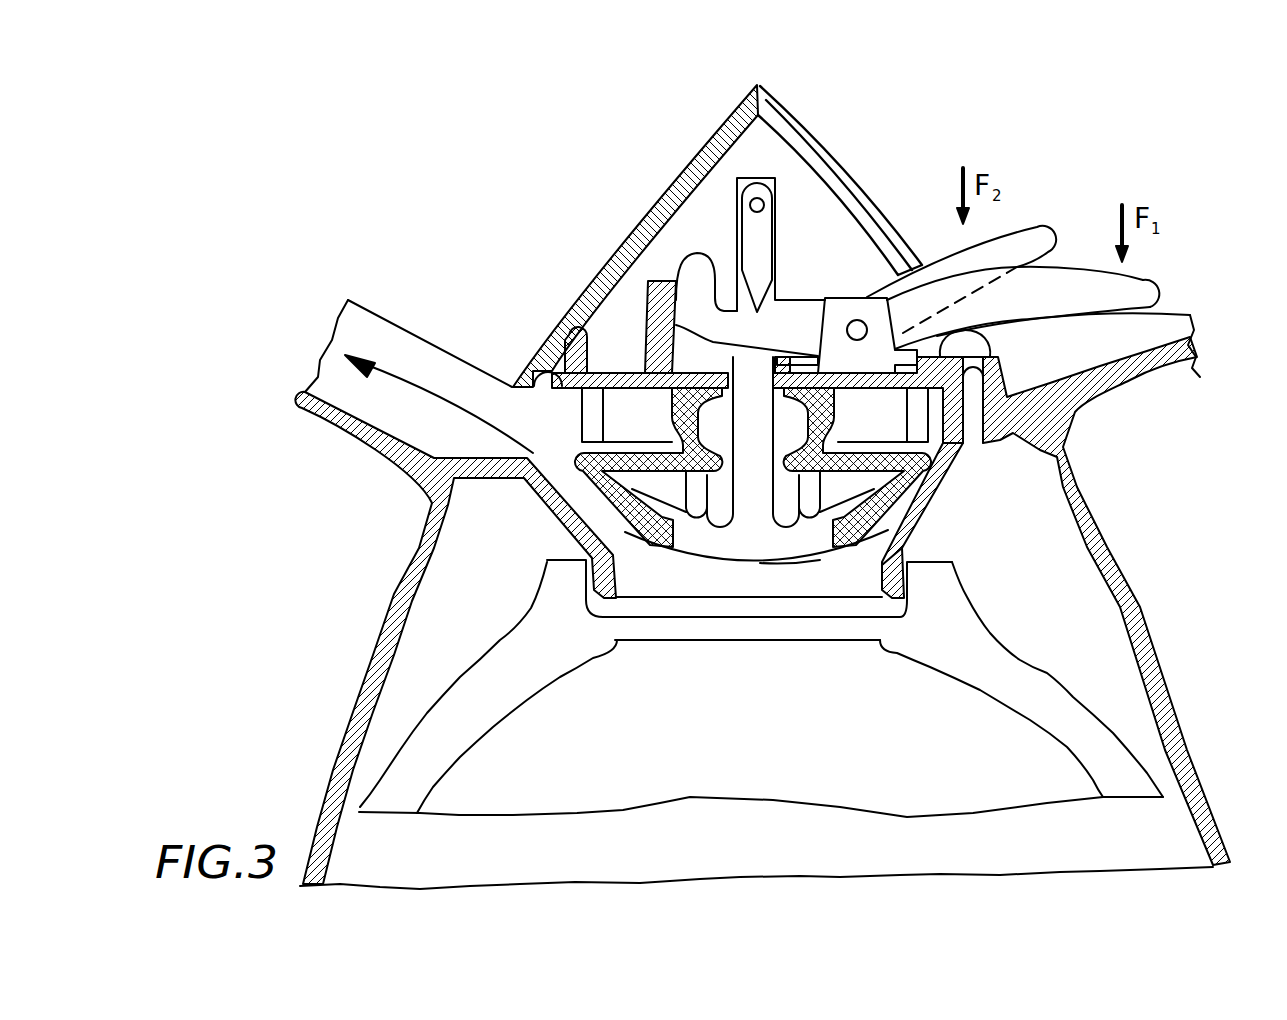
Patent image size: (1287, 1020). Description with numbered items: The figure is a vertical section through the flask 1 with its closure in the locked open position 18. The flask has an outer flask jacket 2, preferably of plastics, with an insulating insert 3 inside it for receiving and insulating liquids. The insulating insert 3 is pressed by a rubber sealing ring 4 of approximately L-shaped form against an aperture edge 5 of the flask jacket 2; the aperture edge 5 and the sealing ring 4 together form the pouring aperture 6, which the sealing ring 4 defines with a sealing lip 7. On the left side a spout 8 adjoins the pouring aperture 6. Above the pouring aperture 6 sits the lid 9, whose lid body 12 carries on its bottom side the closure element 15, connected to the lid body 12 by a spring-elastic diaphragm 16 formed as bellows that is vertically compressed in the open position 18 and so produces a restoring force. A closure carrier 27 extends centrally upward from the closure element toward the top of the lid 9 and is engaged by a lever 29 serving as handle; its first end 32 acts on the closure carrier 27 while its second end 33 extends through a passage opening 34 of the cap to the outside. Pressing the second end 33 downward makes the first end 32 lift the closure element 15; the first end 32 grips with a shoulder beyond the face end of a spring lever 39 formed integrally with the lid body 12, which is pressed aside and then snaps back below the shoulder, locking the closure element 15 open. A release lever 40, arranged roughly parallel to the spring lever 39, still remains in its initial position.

The flask 1 is at (648, 155).
The outer flask jacket 2 is at (348, 734).
The insulating insert 3 is at (434, 770).
The sealing ring 4 is at (588, 585).
The aperture edge 5 is at (633, 572).
The pouring aperture 6 is at (701, 578).
The sealing lip 7 is at (873, 560).
The spout 8 is at (370, 397).
The lid 9 is at (643, 223).
The lid body 12 is at (612, 372).
The closure element 15 is at (769, 548).
The spring-elastic diaphragm 16 is at (632, 452).
The open position 18 is at (783, 560).
The closure carrier 27 is at (800, 216).
The lever 29 is at (1143, 280).
The first end of lever 32 is at (760, 295).
The second end of lever 33 is at (1152, 294).
The passage opening 34 is at (960, 340).
The spring lever 39 is at (647, 295).
The release lever 40 is at (1040, 226).